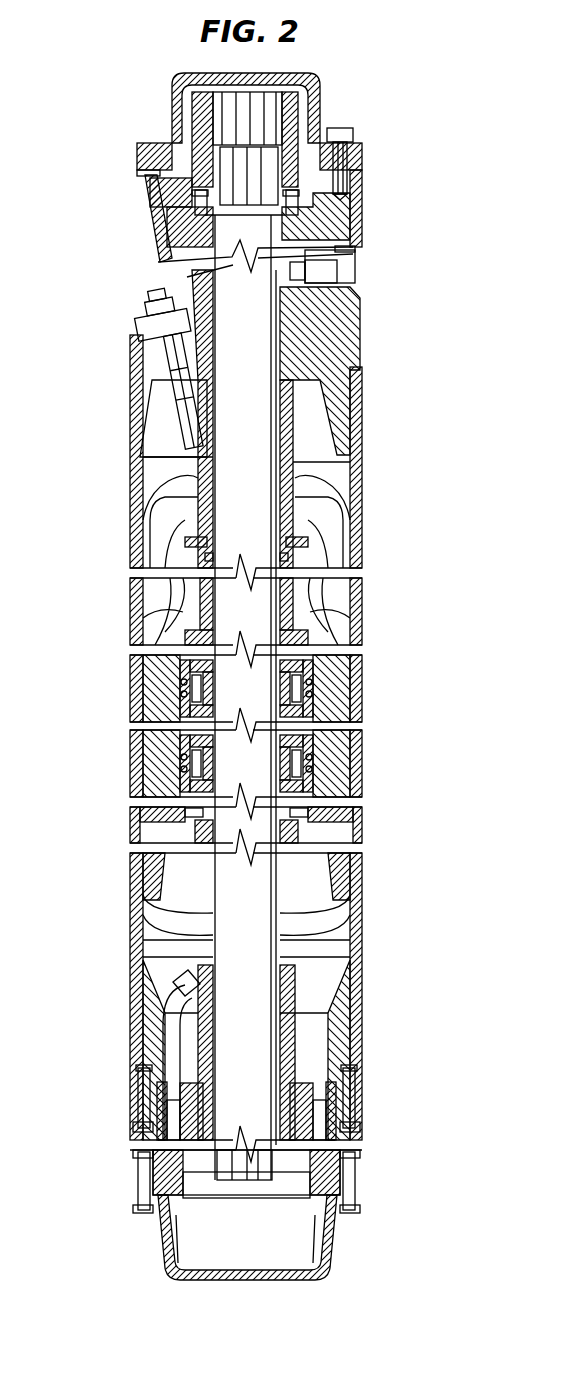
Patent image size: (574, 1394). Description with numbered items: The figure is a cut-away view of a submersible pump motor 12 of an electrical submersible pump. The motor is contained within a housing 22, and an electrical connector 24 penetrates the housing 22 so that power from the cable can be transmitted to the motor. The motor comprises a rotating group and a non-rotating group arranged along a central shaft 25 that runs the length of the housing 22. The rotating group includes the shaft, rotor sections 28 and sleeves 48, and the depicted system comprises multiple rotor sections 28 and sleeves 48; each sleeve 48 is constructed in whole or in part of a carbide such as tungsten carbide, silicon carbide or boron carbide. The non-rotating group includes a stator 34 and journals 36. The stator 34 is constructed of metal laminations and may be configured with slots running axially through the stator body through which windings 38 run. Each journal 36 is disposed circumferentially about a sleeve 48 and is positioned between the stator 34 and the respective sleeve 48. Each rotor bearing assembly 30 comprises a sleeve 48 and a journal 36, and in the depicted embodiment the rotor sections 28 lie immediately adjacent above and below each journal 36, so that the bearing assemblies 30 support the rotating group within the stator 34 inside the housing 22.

The submersible pump motor 12 is at (96, 512).
The housing 22 is at (358, 478).
The electrical connector 24 is at (150, 300).
The shaft 25 is at (260, 335).
The rotor section 28 is at (355, 661).
The rotor bearing assembly 30 is at (120, 720).
The stator 34 is at (335, 713).
The journal 36 is at (300, 691).
The windings 38 is at (335, 596).
The sleeve 48 is at (312, 688).